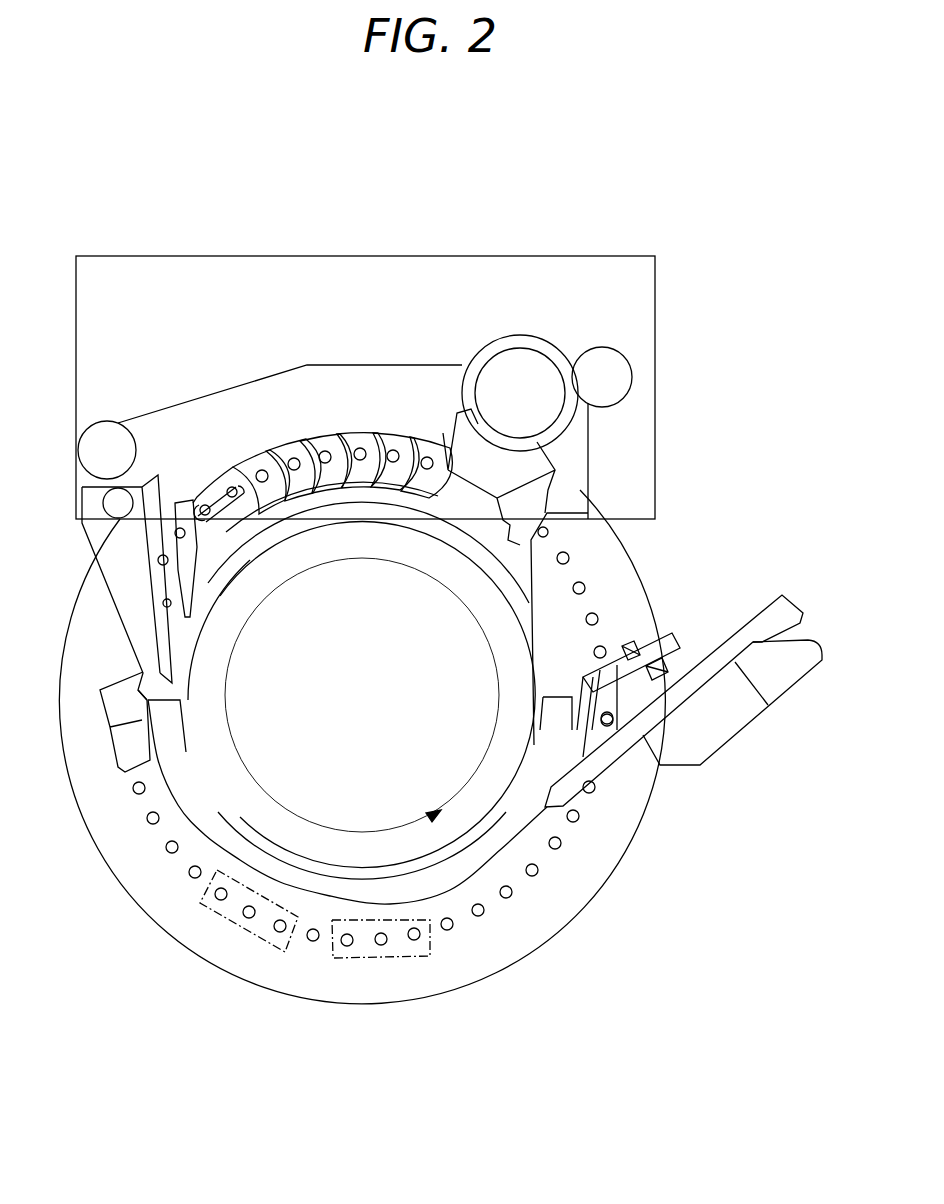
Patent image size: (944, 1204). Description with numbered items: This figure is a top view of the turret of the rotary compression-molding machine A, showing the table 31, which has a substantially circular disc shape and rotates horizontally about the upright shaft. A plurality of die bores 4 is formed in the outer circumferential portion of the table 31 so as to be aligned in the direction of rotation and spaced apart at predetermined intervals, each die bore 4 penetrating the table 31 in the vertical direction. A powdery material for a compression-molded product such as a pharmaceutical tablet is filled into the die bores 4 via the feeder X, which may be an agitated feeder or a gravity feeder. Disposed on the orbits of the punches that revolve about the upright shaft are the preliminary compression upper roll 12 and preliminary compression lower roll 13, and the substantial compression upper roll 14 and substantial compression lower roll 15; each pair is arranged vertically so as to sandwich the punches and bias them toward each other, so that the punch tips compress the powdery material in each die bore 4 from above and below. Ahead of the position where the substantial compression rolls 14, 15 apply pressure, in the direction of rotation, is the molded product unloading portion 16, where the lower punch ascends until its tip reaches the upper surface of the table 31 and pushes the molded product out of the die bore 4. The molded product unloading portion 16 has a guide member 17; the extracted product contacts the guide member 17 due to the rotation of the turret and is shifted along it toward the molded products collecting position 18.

The die bores 4 is at (150, 824).
The preliminary compression upper roll 12 is at (245, 942).
The preliminary compression lower roll 13 is at (242, 928).
The substantial compression upper roll 14 is at (381, 984).
The substantial compression lower roll 15 is at (385, 958).
The molded product unloading portion 16 is at (568, 830).
The guide member 17 is at (613, 760).
The molded products collecting position 18 is at (800, 688).
The table 31 is at (485, 978).
The molding machine A is at (372, 230).
The feeder X is at (325, 363).